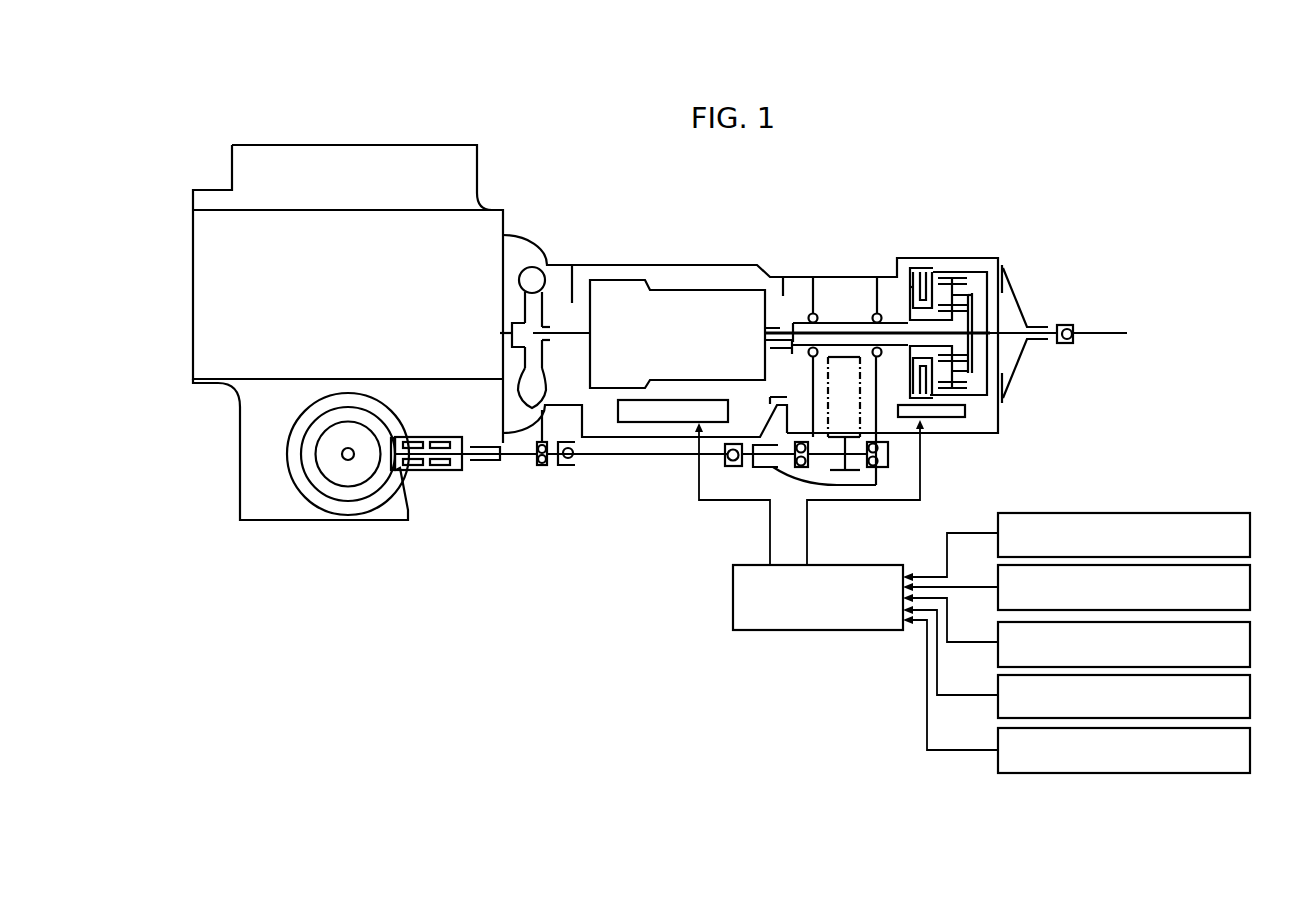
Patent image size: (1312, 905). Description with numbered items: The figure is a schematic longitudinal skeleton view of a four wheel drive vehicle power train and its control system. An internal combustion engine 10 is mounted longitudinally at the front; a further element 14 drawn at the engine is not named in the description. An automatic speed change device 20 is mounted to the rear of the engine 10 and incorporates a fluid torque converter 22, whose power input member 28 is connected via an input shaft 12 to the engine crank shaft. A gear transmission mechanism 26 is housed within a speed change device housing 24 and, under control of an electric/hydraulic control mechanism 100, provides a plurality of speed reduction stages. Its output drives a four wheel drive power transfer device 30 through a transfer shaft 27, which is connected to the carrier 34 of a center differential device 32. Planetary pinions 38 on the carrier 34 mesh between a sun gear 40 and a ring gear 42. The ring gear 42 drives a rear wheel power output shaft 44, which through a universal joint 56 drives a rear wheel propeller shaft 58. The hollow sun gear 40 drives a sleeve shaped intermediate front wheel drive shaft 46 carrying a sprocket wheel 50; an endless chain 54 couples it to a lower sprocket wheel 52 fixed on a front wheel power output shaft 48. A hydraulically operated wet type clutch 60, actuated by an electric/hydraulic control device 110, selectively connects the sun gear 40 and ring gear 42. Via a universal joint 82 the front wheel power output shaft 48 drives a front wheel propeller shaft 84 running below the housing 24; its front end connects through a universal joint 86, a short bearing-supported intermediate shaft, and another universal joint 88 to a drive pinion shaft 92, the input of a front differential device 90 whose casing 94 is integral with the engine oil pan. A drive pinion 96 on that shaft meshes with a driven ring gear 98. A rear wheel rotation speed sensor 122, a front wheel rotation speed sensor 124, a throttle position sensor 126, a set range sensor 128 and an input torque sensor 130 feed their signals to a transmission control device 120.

The internal combustion engine 10 is at (361, 300).
The input shaft 12 is at (505, 333).
The housing 14 is at (240, 441).
The automatic speed change device 20 is at (600, 262).
The fluid torque converter 22 is at (535, 284).
The speed change device housing 24 is at (660, 265).
The gear transmission mechanism 26 is at (677, 334).
The transfer shaft 27 is at (778, 350).
The power input member 28 is at (518, 353).
The four wheel drive power transfer device 30 is at (986, 252).
The center differential device 32 is at (932, 264).
The carrier 34 is at (977, 315).
The planetary pinions 38 is at (1006, 292).
The sun gear 40 is at (910, 318).
The ring gear 42 is at (945, 274).
The rear wheel power output shaft 44 is at (1018, 337).
The intermediate front wheel drive shaft 46 is at (895, 346).
The front wheel power output shaft 48 is at (820, 455).
The sprocket wheel 50 is at (845, 319).
The sprocket wheel 52 is at (852, 470).
The endless chain 54 is at (843, 380).
The universal joint 56 is at (1070, 346).
The rear wheel propeller shaft 58 is at (1110, 332).
The hydraulically operated wet type clutch 60 is at (900, 287).
The universal joint 82 is at (735, 467).
The front wheel propeller shaft 84 is at (617, 456).
The universal joint 86 is at (568, 463).
The universal joint 88 is at (497, 462).
The front differential device 90 is at (310, 468).
The drive pinion shaft 92 is at (427, 470).
The casing 94 is at (425, 438).
The drive pinion 96 is at (386, 462).
The driven ring gear 98 is at (308, 450).
The electric/hydraulic control mechanism 100 is at (676, 412).
The electric/hydraulic control device 110 is at (945, 413).
The transmission control device 120 is at (748, 602).
The rear wheel rotation speed sensor 122 is at (1250, 537).
The front wheel rotation speed sensor 124 is at (1250, 590).
The throttle position sensor 126 is at (1250, 642).
The set range sensor 128 is at (1250, 695).
The input torque sensor 130 is at (1250, 751).